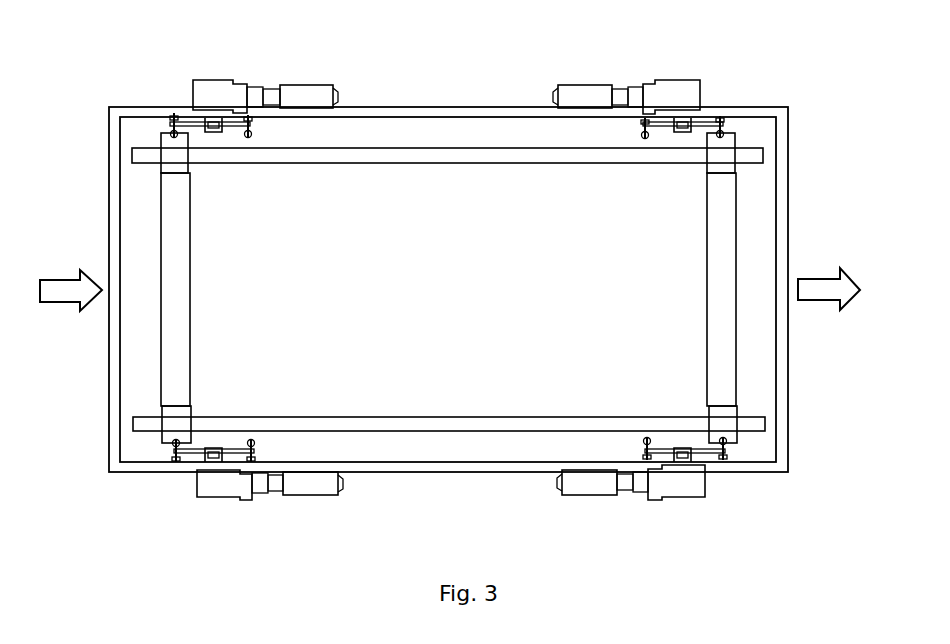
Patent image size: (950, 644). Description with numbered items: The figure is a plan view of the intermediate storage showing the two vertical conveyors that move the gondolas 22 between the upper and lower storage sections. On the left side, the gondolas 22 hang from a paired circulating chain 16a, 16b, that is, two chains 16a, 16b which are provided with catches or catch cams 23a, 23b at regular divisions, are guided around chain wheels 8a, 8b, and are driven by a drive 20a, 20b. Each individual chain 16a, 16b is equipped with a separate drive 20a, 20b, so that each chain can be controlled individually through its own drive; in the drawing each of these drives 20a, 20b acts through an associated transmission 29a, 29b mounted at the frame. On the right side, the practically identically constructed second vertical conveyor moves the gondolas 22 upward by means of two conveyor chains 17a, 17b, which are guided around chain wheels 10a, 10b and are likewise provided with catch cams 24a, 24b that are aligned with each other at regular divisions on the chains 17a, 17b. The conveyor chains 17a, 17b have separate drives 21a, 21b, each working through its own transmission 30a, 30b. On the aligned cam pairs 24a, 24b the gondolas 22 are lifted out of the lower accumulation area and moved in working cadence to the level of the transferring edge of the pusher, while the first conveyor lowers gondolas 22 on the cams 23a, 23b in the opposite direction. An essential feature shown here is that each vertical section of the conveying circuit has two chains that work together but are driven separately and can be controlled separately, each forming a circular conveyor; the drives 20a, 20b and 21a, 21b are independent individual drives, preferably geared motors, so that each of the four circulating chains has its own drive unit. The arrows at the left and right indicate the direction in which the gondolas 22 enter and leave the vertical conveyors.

The gondola 22 is at (177, 311).
The chain 16b is at (174, 116).
The chain 16a is at (176, 463).
The conveyor chain 17b is at (722, 128).
The conveyor chain 17a is at (725, 458).
The transmission 29b is at (213, 90).
The transmission 29a is at (215, 500).
The transmission 30b is at (680, 88).
The transmission 30a is at (678, 500).
The drive 20b is at (308, 92).
The drive 20a is at (312, 498).
The drive 21b is at (588, 86).
The drive 21a is at (588, 495).
The chain wheel 8b is at (228, 130).
The chain wheel 8a is at (228, 447).
The chain wheel 10b is at (664, 132).
The chain wheel 10a is at (674, 446).
The catch cam 23b is at (248, 140).
The catch cam 23a is at (255, 440).
The catch cam 24b is at (645, 140).
The catch cam 24a is at (648, 440).